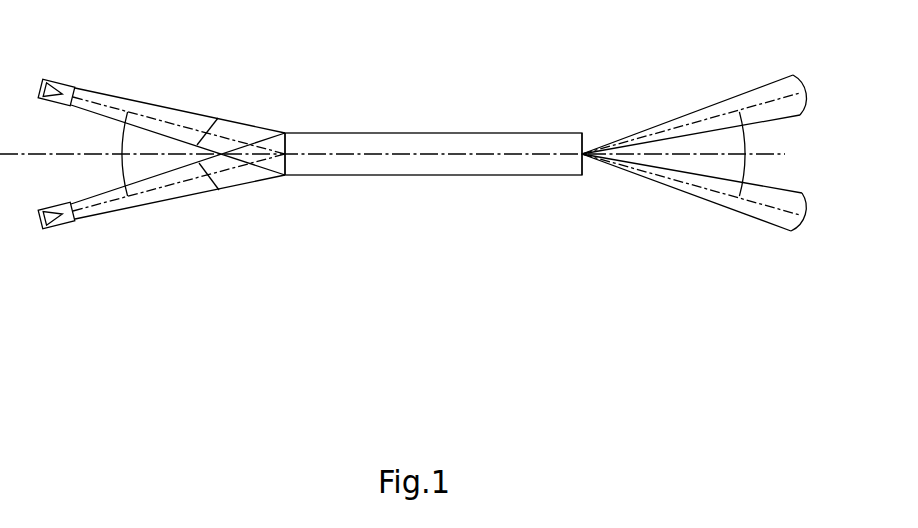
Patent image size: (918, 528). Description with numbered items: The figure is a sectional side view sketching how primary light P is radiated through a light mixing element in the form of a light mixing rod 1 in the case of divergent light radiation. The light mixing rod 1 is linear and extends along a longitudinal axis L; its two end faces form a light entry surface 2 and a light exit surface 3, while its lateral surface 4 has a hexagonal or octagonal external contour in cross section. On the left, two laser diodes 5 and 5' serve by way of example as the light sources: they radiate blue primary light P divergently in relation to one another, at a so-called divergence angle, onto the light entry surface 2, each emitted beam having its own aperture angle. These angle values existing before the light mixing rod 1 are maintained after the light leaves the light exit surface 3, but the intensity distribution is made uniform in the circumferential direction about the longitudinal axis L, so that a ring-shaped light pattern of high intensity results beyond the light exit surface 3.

The light mixing rod 1 is at (370, 132).
The light entry surface 2 is at (288, 166).
The light exit surface 3 is at (580, 143).
The lateral surface 4 is at (462, 161).
The laser diode 5 is at (57, 241).
The laser diode 5' is at (68, 71).
The longitudinal axis L is at (37, 155).
The primary light P is at (157, 110).